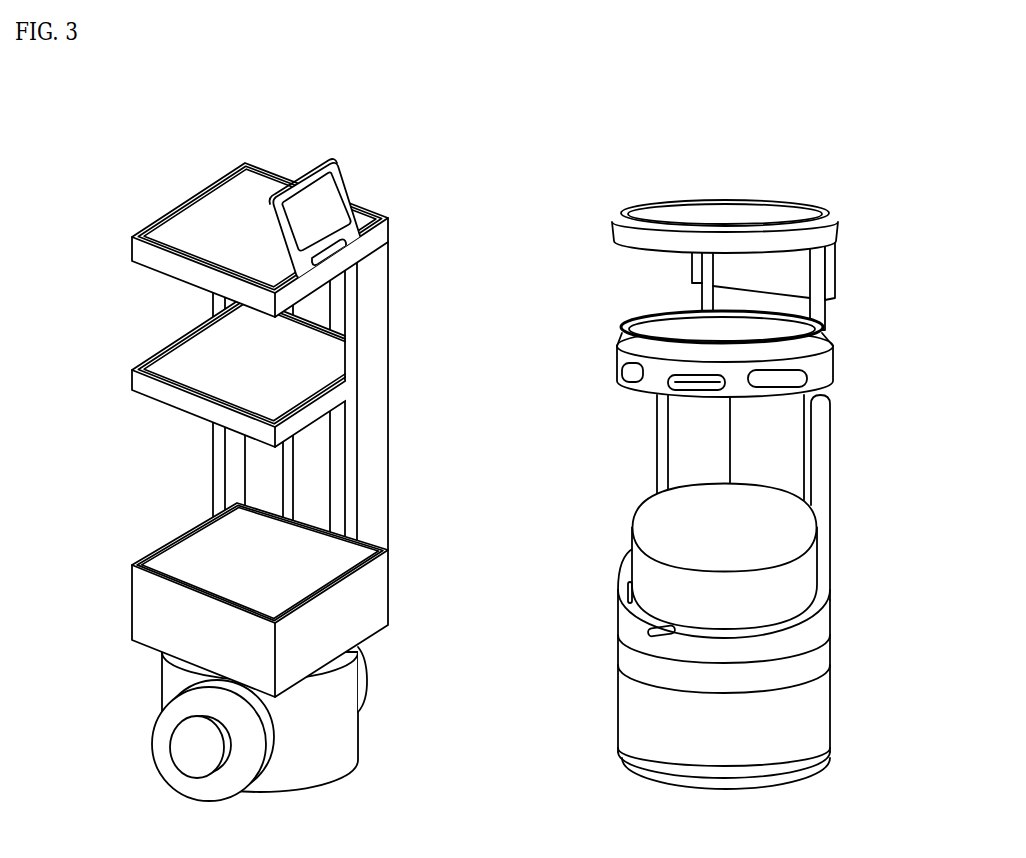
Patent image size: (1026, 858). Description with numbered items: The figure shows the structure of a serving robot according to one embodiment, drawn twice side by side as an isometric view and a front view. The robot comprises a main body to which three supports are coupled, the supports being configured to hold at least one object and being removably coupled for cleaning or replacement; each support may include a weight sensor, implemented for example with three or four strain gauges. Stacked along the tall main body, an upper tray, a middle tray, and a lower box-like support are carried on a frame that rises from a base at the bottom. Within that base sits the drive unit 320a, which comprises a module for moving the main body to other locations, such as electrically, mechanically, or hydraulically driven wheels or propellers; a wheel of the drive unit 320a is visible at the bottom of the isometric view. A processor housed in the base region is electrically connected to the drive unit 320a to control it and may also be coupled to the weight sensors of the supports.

The drive unit 320a is at (192, 751).